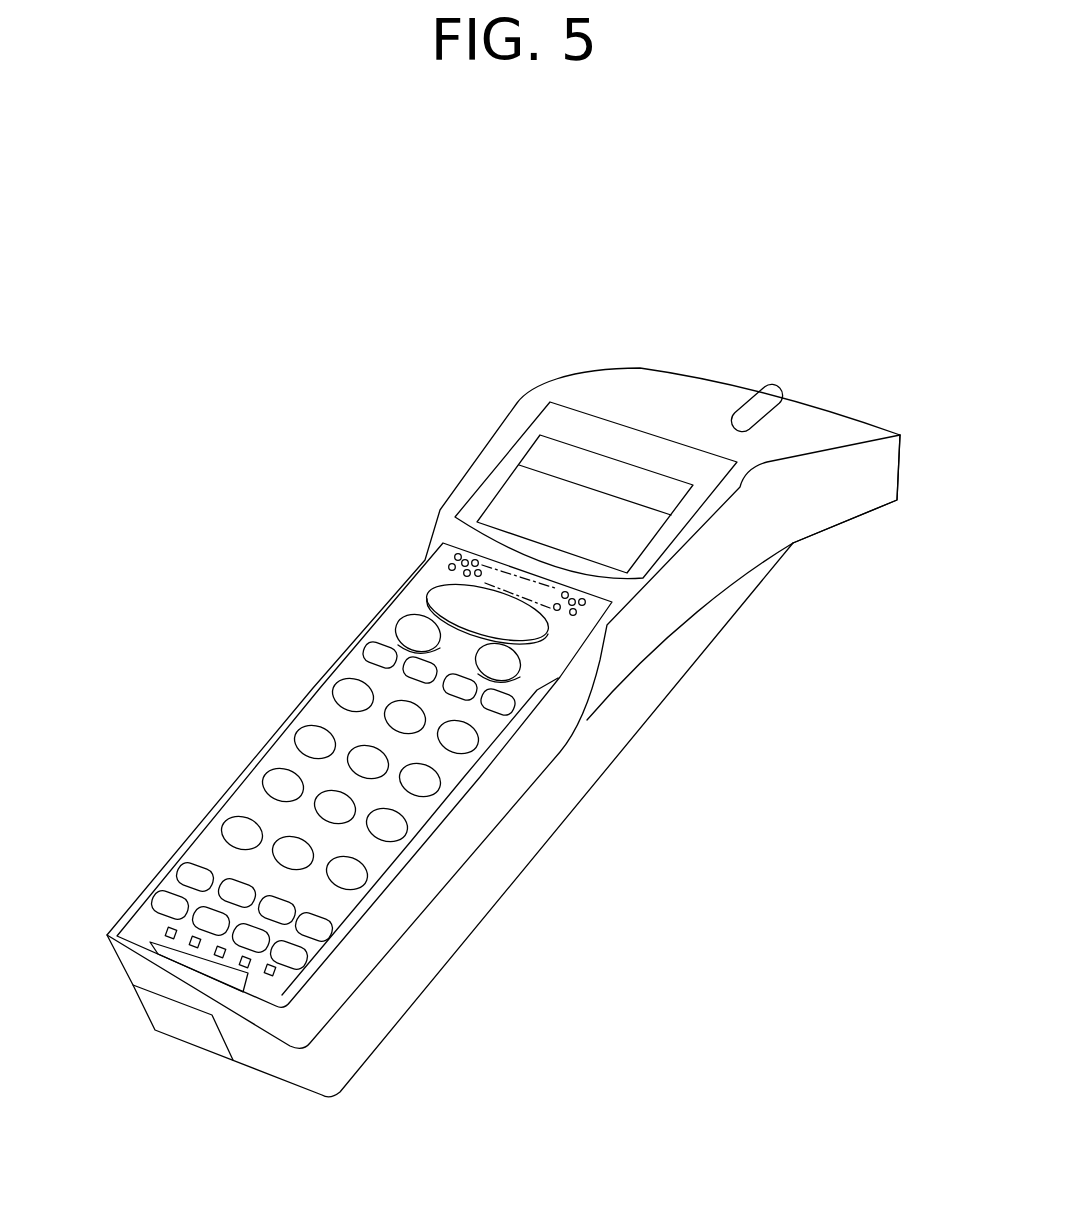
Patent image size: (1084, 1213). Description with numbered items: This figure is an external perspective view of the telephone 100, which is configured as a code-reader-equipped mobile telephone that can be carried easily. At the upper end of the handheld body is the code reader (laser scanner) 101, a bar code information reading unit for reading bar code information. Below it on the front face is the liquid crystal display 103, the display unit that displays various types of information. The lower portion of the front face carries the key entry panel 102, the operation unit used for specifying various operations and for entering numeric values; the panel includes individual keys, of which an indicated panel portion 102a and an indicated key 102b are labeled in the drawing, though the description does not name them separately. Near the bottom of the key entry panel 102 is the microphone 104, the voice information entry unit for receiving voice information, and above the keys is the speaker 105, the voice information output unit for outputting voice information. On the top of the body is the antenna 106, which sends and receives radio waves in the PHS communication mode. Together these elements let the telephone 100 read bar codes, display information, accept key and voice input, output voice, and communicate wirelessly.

The telephone 100 is at (548, 378).
The code reader (laser scanner) 101 is at (903, 457).
The key entry panel 102 is at (395, 580).
The key panel 102a is at (440, 593).
The key 102b is at (503, 703).
The liquid crystal display 103 is at (517, 502).
The microphone 104 is at (150, 940).
The speaker 105 is at (447, 598).
The antenna 106 is at (765, 398).